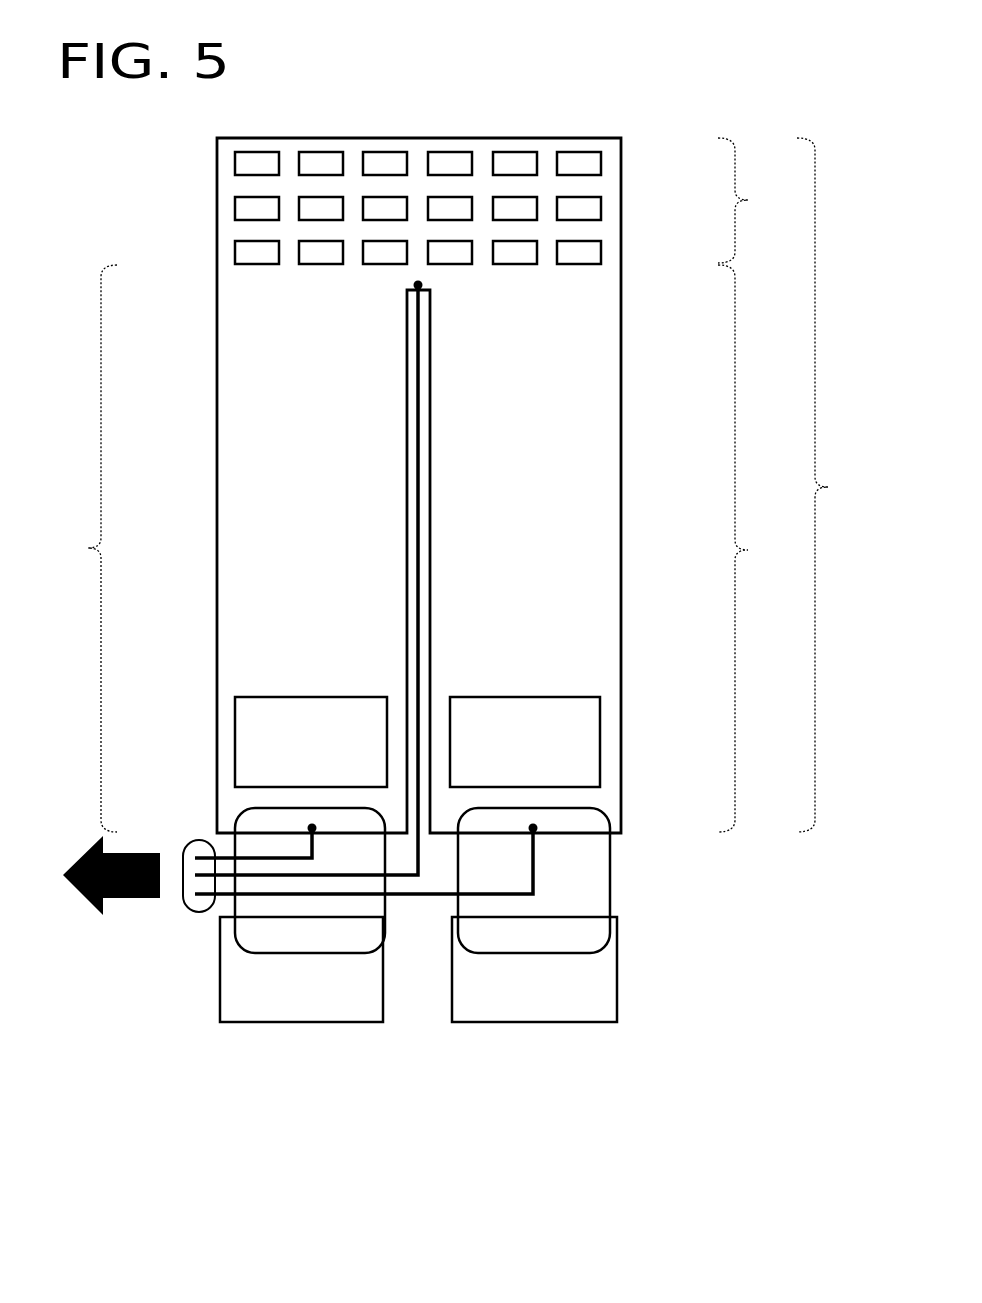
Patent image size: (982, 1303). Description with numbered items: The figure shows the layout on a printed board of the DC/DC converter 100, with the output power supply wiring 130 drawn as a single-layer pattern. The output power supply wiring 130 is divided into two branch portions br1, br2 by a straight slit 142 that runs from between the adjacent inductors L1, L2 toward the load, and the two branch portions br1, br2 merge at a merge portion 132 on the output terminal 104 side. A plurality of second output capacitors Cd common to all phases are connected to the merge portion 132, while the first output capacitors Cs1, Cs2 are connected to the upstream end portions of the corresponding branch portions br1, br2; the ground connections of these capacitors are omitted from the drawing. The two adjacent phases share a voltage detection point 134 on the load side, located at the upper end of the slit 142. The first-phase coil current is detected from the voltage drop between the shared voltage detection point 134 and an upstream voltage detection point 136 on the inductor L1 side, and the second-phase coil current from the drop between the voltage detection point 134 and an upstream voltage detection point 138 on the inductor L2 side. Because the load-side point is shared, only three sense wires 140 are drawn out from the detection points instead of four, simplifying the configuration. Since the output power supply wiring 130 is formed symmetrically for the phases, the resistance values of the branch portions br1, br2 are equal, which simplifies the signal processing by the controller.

The DC/DC converter 100 is at (438, 1166).
The output terminal 104 is at (423, 126).
The second output capacitors Cd is at (262, 205).
The output power supply wiring 130 is at (835, 485).
The merge portion 132 is at (755, 200).
The voltage detection point 134 is at (417, 285).
The voltage detection point 136 is at (312, 828).
The voltage detection point 138 is at (533, 828).
The sense wires 140 is at (197, 912).
The slit 142 is at (427, 534).
The first output capacitor Cs1 is at (235, 741).
The first output capacitor Cs2 is at (602, 741).
The inductor L1 is at (300, 953).
The inductor L2 is at (532, 953).
The branch portion br1 is at (84, 548).
The branch portion br2 is at (751, 548).